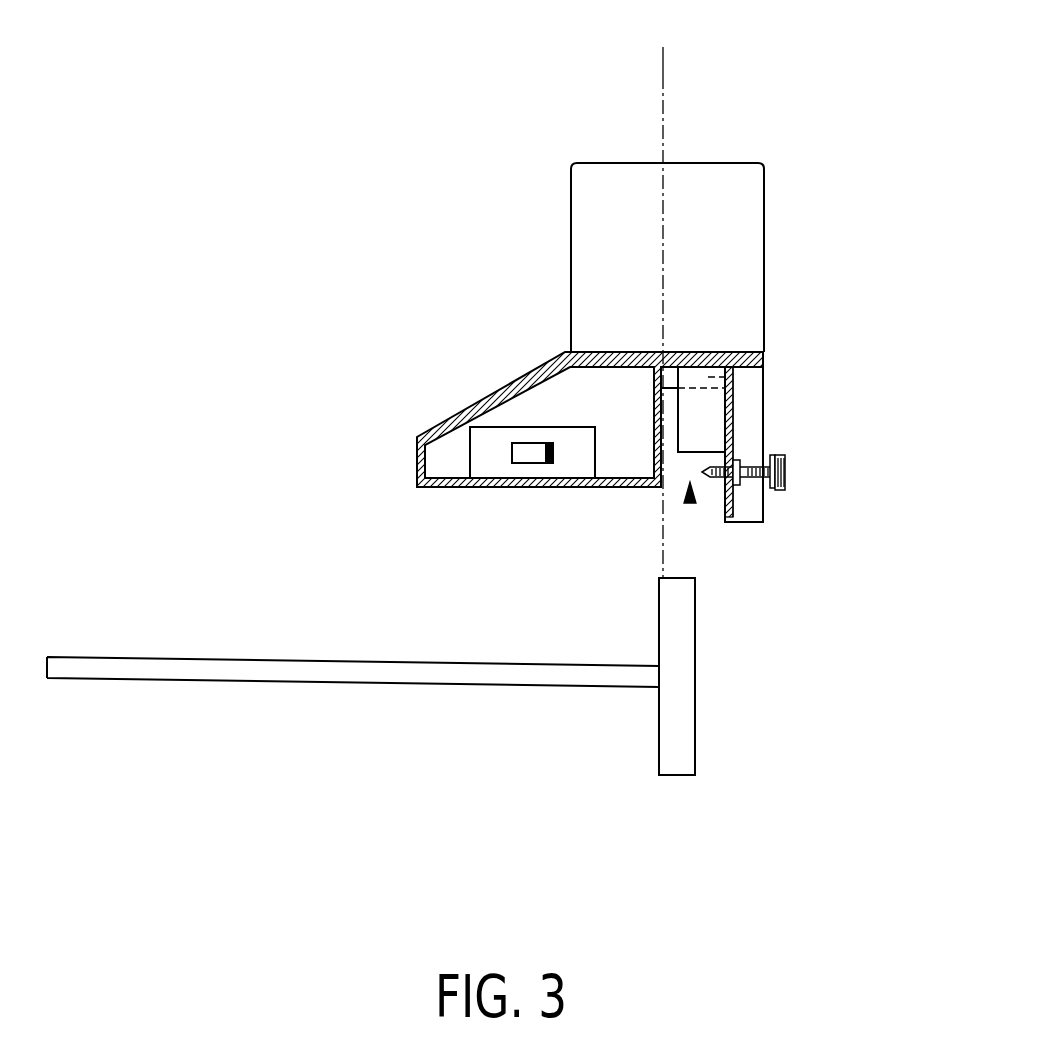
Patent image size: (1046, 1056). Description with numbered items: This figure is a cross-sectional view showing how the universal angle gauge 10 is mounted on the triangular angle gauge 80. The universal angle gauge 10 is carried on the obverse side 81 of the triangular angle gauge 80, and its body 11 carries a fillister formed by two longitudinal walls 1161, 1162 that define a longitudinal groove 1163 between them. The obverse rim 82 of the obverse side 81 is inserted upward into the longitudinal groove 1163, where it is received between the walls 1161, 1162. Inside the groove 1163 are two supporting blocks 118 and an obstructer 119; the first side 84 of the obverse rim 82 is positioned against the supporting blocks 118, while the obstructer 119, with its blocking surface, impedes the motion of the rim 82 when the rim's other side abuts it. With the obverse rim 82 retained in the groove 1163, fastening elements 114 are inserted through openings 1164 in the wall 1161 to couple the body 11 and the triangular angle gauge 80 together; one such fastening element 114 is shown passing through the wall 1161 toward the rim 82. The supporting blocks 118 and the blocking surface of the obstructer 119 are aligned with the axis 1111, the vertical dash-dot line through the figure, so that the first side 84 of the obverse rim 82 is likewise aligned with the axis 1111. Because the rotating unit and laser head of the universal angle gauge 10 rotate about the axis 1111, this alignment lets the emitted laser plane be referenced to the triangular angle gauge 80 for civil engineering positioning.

The universal angle gauge 10 is at (797, 131).
The axis 1111 is at (663, 75).
The body 11 is at (474, 393).
The supporting blocks 118 is at (733, 378).
The obstructer 119 is at (713, 430).
The fastening elements 114 is at (786, 475).
The longitudinal wall 1161 is at (714, 500).
The longitudinal wall 1162 is at (661, 464).
The longitudinal groove 1163 is at (690, 498).
The openings 1164 is at (719, 483).
The first side 84 is at (677, 577).
The triangular angle gauge 80 is at (426, 627).
The obverse side 81 is at (278, 657).
The obverse rim 82 is at (685, 667).